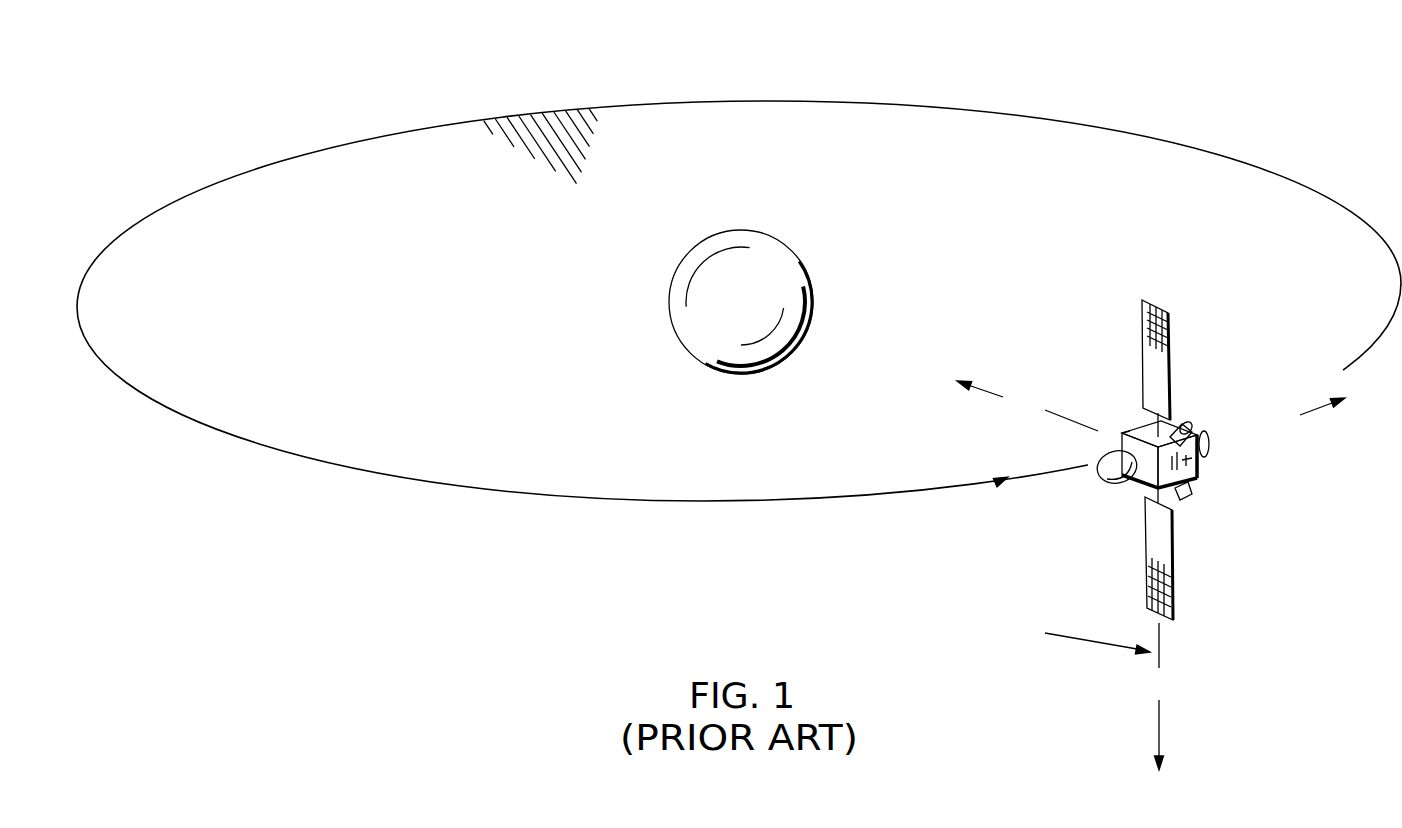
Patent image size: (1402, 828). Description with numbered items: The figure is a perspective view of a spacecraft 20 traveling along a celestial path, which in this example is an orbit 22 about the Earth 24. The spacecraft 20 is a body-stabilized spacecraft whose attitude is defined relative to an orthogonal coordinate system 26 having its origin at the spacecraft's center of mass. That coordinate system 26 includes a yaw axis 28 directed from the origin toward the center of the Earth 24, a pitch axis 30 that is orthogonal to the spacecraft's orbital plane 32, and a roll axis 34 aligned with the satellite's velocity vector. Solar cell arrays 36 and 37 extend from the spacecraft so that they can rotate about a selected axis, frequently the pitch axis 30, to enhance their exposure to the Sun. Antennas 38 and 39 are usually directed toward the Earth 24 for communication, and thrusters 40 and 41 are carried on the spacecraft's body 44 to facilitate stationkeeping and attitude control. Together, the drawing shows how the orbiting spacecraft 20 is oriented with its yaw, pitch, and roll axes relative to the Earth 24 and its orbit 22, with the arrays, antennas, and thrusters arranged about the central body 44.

The spacecraft 20 is at (1081, 502).
The orbit 22 is at (739, 305).
The Earth 24 is at (718, 232).
The orthogonal coordinate system 26 is at (1077, 635).
The yaw axis 28 is at (1027, 406).
The pitch axis 30 is at (1160, 696).
The orbital plane 32 is at (547, 128).
The roll axis 34 is at (1217, 437).
The solar cell array 36 is at (1152, 333).
The solar cell array 37 is at (1148, 593).
The antenna 38 is at (1104, 455).
The antenna 39 is at (1210, 447).
The thruster 40 is at (1192, 427).
The thruster 41 is at (1190, 497).
The spacecraft body 44 is at (1133, 416).